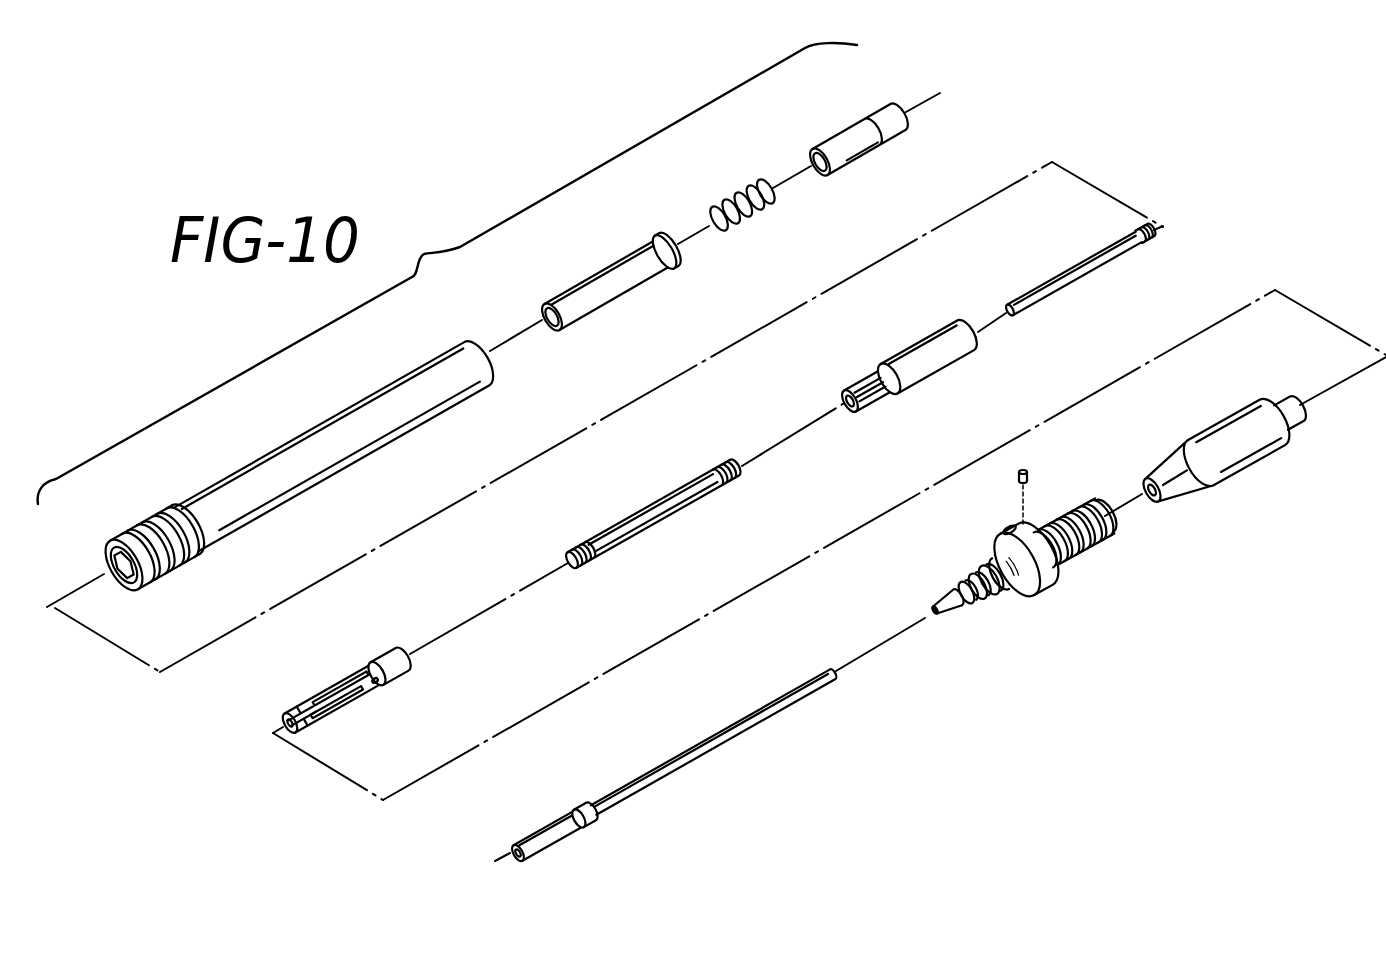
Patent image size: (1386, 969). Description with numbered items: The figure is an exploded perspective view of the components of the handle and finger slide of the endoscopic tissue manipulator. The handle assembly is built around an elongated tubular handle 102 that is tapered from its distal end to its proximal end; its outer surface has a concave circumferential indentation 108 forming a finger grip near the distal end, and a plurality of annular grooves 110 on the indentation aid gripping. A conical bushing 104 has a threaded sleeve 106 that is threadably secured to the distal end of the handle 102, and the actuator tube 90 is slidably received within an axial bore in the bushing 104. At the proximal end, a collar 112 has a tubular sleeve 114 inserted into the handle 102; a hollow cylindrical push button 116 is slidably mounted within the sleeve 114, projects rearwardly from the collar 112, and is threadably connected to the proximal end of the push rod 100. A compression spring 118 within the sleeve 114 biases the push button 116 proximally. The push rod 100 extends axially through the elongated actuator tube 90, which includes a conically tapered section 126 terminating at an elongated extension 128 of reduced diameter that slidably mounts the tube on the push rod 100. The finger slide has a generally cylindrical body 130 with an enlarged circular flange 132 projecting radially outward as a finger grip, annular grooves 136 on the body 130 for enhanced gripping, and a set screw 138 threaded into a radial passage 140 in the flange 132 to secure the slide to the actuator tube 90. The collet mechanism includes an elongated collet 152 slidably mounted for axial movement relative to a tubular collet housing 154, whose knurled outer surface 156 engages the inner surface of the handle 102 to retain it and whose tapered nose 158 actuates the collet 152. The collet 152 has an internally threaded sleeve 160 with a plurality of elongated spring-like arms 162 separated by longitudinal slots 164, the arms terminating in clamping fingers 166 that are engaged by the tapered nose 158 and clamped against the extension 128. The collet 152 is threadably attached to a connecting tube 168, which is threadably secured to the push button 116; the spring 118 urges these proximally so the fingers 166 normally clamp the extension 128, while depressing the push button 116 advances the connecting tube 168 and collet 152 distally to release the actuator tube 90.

The actuator tube 90 is at (561, 831).
The push rod 100 is at (1093, 260).
The tubular handle 102 is at (323, 435).
The conical bushing 104 is at (1193, 485).
The threaded sleeve 106 is at (1275, 400).
The circumferential indentation 108 is at (166, 573).
The annular grooves 110 is at (148, 519).
The collar 112 is at (653, 237).
The tubular sleeve 114 is at (583, 290).
The push button 116 is at (843, 143).
The compression spring 118 is at (737, 193).
The conically tapered section 126 is at (581, 803).
The elongated extension 128 is at (681, 766).
The cylindrical body 130 is at (953, 618).
The circular flange 132 is at (1033, 590).
The annular grooves 136 is at (970, 570).
The set screw 138 is at (1030, 475).
The radial passage 140 is at (1023, 530).
The collet 152 is at (275, 695).
The collet housing 154 is at (892, 361).
The knurled outer surface 156 is at (918, 345).
The tapered nose 158 is at (870, 372).
The internally threaded sleeve 160 is at (397, 657).
The spring-like arms 162 is at (347, 680).
The longitudinal slots 164 is at (377, 681).
The clamping fingers 166 is at (297, 707).
The connecting tube 168 is at (656, 502).